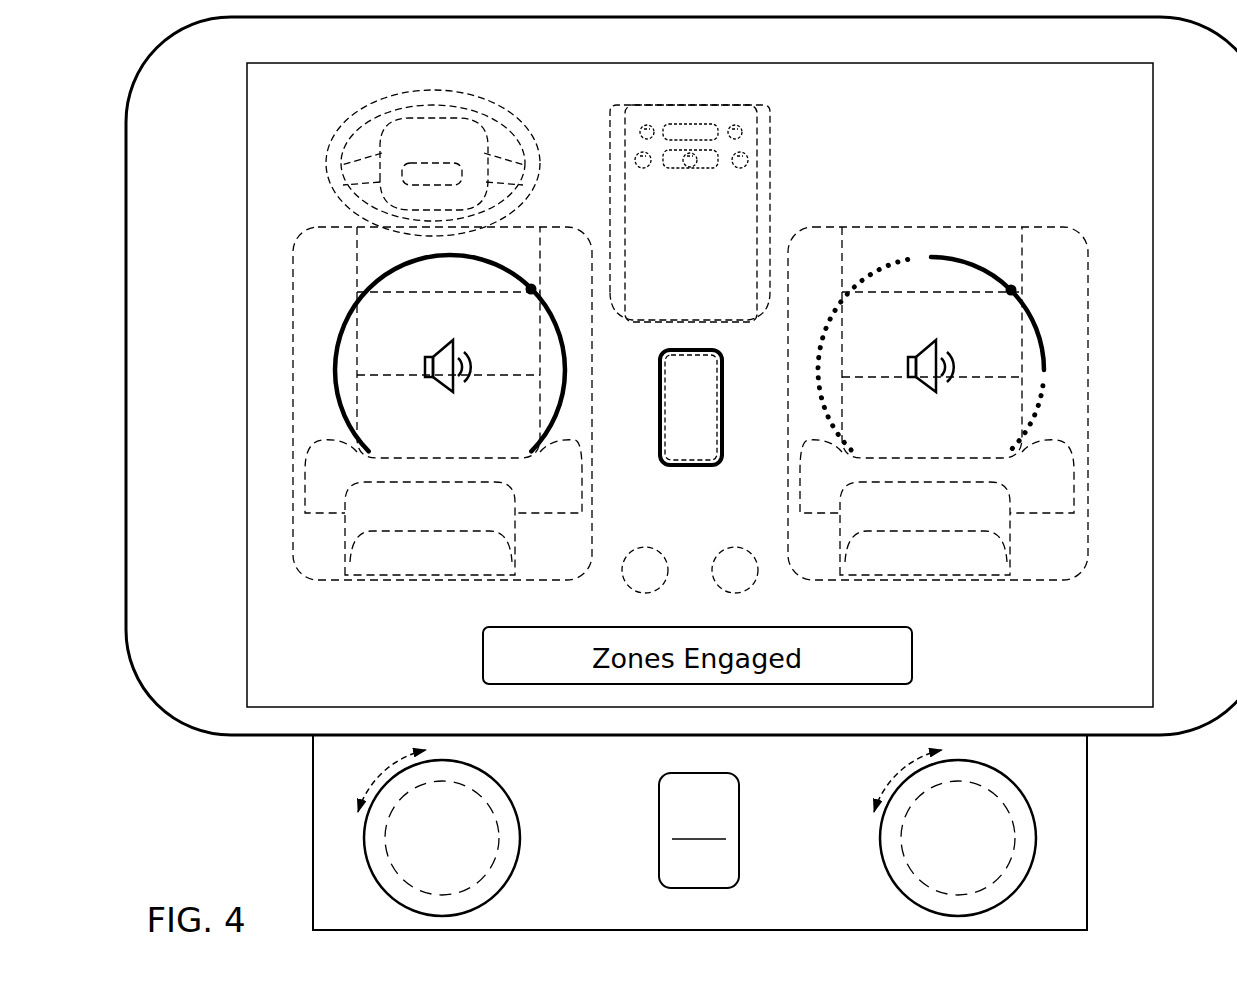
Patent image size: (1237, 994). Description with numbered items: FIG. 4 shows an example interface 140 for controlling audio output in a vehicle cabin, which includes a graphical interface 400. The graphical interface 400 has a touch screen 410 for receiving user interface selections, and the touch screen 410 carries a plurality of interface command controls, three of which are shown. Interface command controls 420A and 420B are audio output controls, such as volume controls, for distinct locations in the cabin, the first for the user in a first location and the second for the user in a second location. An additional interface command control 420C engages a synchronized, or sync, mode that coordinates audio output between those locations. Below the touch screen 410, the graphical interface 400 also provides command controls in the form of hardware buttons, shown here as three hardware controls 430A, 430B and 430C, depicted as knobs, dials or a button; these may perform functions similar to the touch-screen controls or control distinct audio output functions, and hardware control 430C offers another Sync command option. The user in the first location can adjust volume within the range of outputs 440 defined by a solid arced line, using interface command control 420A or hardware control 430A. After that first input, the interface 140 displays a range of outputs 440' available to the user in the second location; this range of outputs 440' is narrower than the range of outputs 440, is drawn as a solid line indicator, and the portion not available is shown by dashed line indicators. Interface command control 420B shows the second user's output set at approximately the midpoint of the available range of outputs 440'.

The interface 140 is at (126, 95).
The graphical interface 400 is at (240, 301).
The touch screen 410 is at (672, 200).
The interface command control 420A is at (346, 252).
The interface command control 420B is at (1045, 252).
The interface command control 420C is at (691, 332).
The hardware control 430A is at (410, 851).
The hardware control 430B is at (926, 851).
The hardware control 430C is at (640, 831).
The range of outputs 440 is at (463, 321).
The range of outputs 440' is at (931, 317).